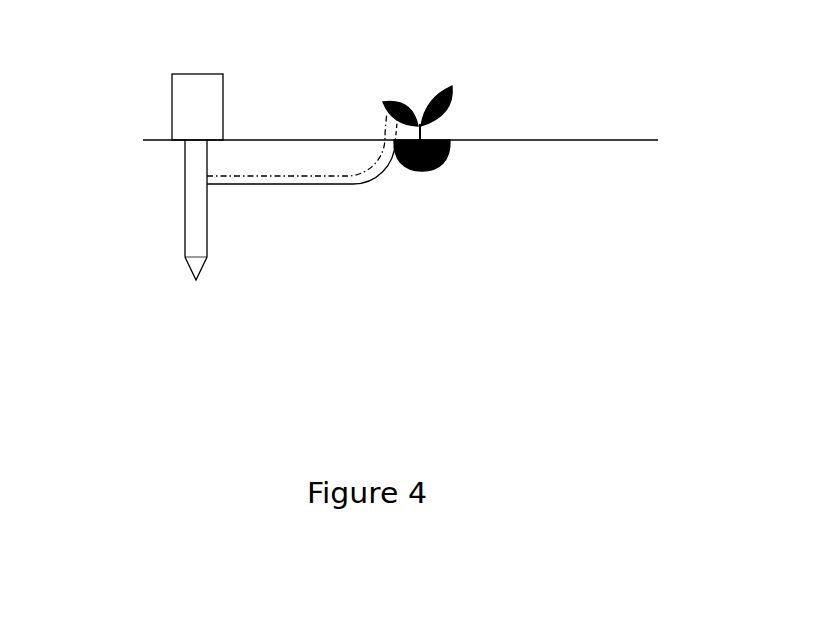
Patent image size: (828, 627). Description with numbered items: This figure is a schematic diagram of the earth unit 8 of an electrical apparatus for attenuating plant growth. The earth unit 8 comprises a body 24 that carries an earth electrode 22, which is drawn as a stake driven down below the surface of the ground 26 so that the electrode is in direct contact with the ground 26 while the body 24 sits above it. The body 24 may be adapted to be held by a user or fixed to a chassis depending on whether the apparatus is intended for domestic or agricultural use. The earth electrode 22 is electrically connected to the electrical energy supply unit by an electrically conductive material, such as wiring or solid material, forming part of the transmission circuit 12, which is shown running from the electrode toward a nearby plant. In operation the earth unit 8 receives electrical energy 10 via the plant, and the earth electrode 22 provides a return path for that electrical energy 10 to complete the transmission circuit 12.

The earth unit 8 is at (247, 177).
The body 24 is at (172, 89).
The earth electrode 22 is at (196, 206).
The electrical energy 10 is at (338, 185).
The transmission circuit 12 is at (293, 175).
The ground 26 is at (623, 140).